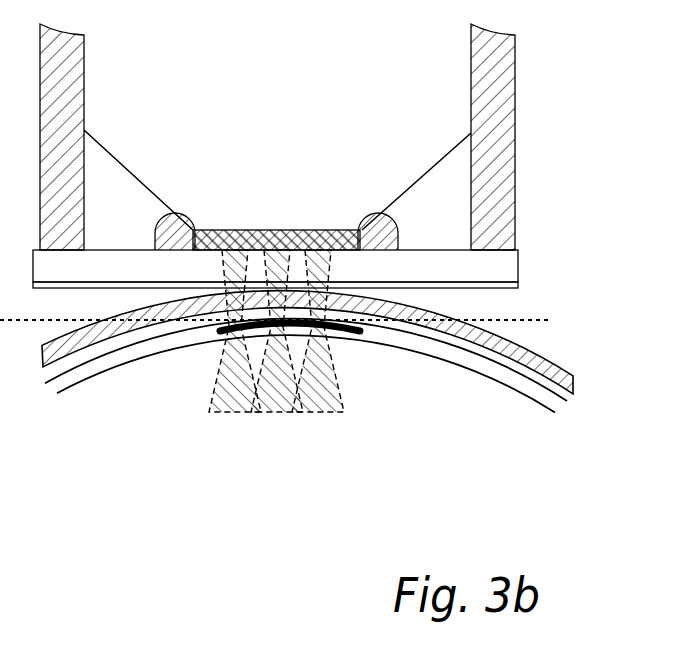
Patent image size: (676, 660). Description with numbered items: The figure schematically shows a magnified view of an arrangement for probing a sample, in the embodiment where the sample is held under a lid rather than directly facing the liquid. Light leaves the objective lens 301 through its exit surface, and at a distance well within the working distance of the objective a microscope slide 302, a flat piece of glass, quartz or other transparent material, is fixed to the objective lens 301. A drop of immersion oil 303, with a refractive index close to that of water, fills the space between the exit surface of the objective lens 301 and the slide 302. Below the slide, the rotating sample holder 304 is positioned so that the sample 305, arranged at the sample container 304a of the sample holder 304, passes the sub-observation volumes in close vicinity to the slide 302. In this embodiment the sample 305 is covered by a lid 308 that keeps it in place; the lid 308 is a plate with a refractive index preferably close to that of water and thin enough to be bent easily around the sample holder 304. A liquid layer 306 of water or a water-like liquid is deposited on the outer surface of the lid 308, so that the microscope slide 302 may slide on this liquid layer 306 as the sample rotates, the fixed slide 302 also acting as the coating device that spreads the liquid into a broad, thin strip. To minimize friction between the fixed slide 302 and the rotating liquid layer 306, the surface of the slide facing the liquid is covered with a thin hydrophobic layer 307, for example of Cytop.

The objective lens 301 is at (131, 170).
The microscope slide 302 is at (521, 270).
The immersion oil 303 is at (388, 222).
The rotating sample holder 304 is at (303, 406).
The sample container 304a is at (532, 393).
The sample 305 is at (347, 332).
The liquid layer 306 is at (302, 323).
The hydrophobic layer 307 is at (499, 292).
The lid 308 is at (117, 343).